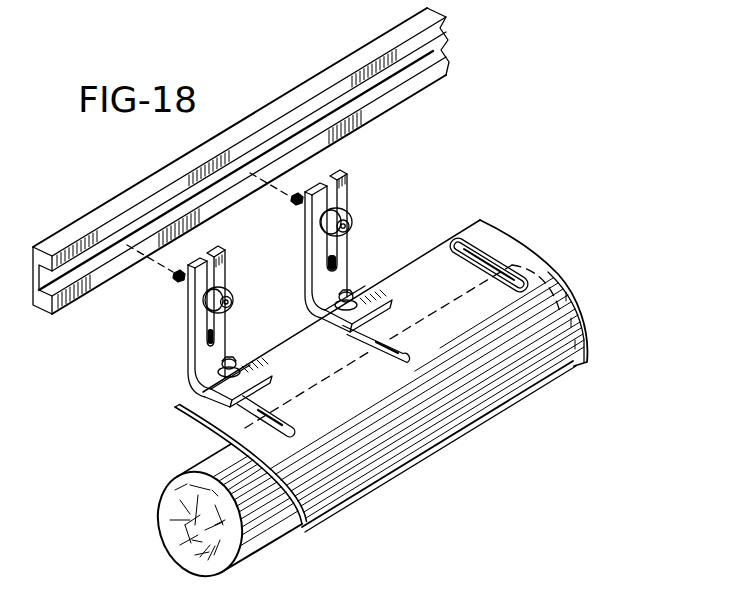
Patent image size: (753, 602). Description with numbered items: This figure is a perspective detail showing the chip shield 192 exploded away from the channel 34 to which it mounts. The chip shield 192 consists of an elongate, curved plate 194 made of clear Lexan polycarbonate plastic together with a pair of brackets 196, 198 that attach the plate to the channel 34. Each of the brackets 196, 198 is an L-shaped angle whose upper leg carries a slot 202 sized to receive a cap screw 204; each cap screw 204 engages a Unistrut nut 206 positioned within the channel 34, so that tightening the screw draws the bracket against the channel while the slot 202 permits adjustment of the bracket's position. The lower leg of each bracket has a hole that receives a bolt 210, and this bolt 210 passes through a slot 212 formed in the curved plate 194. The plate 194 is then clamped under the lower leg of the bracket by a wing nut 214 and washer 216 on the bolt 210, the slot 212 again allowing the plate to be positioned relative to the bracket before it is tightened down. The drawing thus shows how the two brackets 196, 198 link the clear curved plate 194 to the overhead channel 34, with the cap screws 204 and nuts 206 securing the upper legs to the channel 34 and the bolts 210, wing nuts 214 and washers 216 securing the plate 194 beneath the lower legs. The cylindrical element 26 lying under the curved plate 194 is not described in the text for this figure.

The channel 34 is at (410, 88).
The Unistrut nut 206 is at (266, 162).
The bracket 196 is at (189, 330).
The bracket 198 is at (349, 265).
The slot 202 is at (345, 191).
The cap screw 204 is at (236, 297).
The bolt 210 is at (353, 283).
The wing nut 214 is at (188, 367).
The washer 216 is at (392, 302).
The slot 212 is at (472, 247).
The chip shield 192 is at (506, 229).
The curved plate 194 is at (555, 268).
The cylindrical tube 26 is at (172, 501).